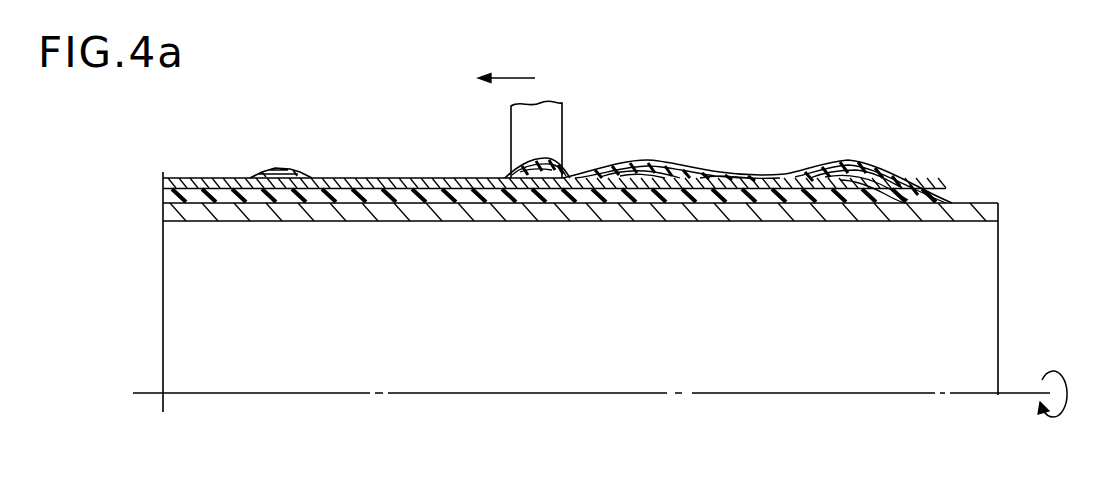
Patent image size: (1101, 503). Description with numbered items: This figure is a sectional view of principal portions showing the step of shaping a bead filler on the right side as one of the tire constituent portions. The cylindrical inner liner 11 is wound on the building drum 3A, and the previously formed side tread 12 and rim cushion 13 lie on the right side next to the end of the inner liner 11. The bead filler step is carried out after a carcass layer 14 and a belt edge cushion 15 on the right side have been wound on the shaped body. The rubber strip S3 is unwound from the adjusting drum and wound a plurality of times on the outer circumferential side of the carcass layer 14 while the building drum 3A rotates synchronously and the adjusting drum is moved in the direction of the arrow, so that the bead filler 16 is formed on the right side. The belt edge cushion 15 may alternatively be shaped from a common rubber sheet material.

The building drum 3A is at (998, 203).
The inner liner 11 is at (362, 196).
The carcass layer 14 is at (436, 183).
The belt edge cushion 15 is at (276, 170).
The rubber strip S3 is at (555, 126).
The bead filler 16 is at (570, 170).
The rim cushion 13 is at (673, 177).
The side tread 12 is at (860, 163).